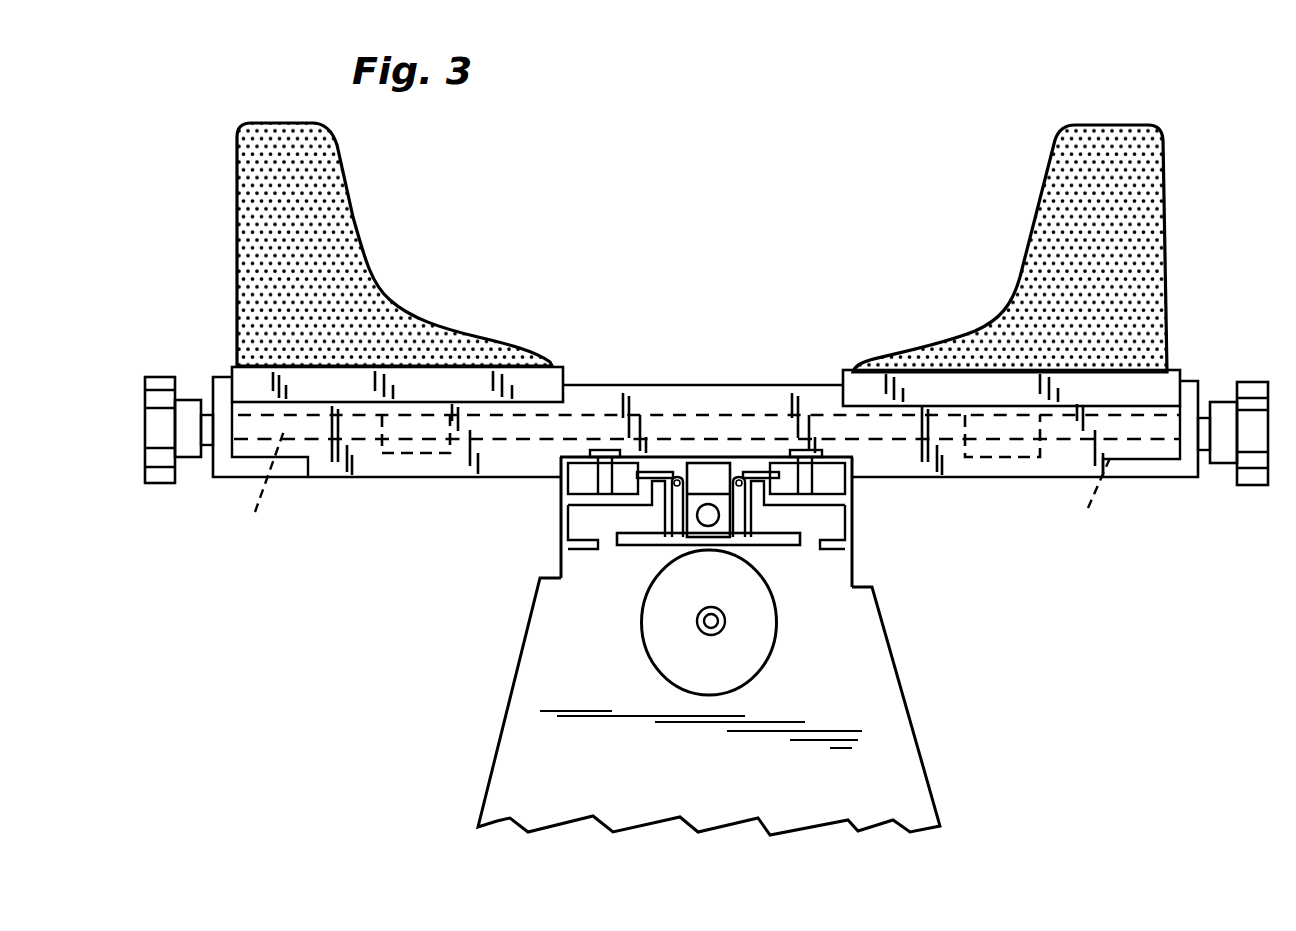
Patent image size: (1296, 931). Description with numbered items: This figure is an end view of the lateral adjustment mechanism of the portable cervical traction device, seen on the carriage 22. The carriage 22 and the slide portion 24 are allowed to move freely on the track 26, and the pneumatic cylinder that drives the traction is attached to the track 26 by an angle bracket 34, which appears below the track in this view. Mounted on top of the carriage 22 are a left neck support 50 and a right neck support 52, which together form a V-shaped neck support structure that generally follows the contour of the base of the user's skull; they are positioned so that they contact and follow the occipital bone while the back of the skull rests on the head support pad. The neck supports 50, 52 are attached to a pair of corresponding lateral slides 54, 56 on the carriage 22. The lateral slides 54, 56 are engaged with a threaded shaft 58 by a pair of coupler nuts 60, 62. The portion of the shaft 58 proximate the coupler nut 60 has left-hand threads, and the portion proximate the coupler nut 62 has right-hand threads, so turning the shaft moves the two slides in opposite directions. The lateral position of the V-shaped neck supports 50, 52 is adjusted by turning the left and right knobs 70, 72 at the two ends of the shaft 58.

The carriage 22 is at (683, 393).
The slide portion 24 is at (562, 490).
The track 26 is at (548, 533).
The angle bracket 34 is at (524, 645).
The left neck support 50 is at (287, 130).
The right neck support 52 is at (1110, 130).
The lateral slide 54 is at (255, 383).
The lateral slide 56 is at (1162, 380).
The threaded shaft 58 is at (670, 488).
The coupler nut 60 is at (415, 433).
The coupler nut 62 is at (1000, 446).
The left knob 70 is at (160, 470).
The right knob 72 is at (1252, 388).